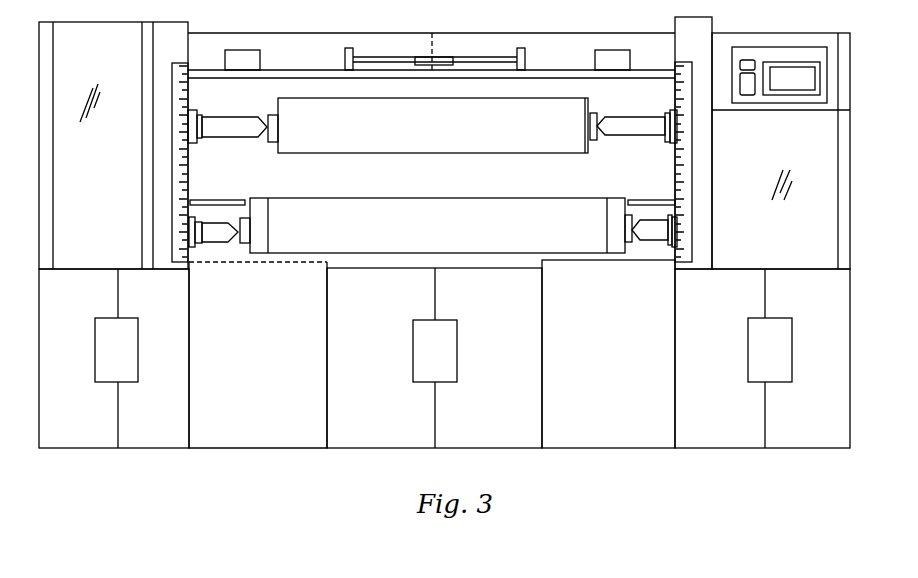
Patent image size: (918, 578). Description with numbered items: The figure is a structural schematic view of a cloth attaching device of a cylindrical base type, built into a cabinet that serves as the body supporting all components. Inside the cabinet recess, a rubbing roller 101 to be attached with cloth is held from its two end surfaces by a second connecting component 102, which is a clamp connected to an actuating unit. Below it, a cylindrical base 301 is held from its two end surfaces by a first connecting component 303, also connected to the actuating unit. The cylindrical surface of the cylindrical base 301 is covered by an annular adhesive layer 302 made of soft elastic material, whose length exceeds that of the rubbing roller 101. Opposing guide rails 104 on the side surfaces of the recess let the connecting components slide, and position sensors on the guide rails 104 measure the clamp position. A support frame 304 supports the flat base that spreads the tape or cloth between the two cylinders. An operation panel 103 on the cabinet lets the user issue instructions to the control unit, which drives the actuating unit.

The rubbing roller 101 is at (591, 97).
The second connecting component 102 is at (222, 117).
The operation panel 103 is at (790, 98).
The guide rail 104 is at (180, 245).
The cylindrical base 301 is at (618, 196).
The annular adhesive layer 302 is at (438, 197).
The first connecting component 303 is at (222, 246).
The support frame 304 is at (220, 197).